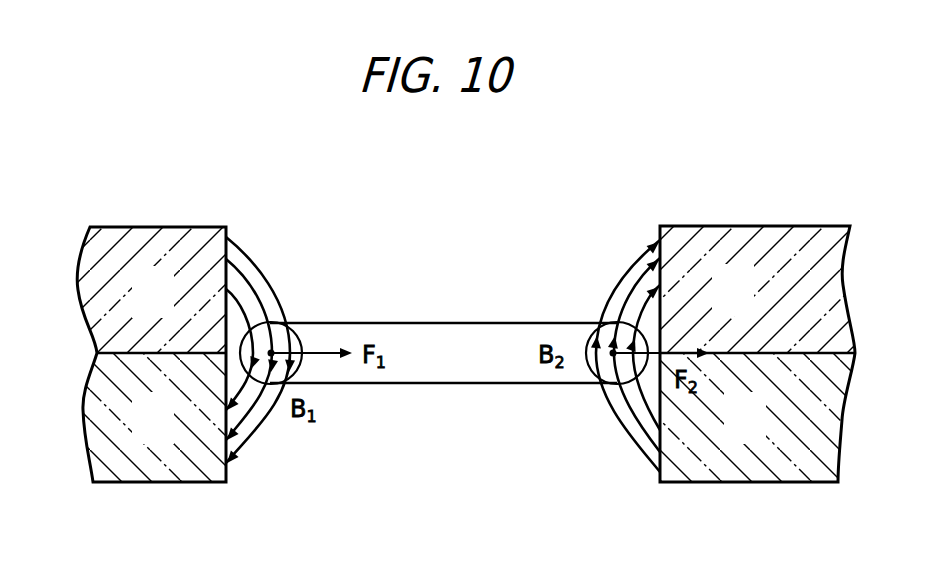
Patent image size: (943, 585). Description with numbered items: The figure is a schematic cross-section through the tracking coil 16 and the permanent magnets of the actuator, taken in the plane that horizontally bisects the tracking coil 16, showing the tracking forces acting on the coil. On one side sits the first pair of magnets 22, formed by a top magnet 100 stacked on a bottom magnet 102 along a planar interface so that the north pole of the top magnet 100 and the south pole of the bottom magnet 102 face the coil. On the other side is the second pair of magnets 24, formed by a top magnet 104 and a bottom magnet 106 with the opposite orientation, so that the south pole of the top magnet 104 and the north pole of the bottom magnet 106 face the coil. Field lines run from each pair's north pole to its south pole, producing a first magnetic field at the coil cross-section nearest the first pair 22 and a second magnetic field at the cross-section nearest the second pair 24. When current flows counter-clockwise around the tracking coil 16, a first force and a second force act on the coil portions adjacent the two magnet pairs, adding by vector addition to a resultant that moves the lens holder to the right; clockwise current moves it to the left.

The tracking coil 16 is at (432, 321).
The first pair of magnets 22 is at (165, 359).
The second pair of magnets 24 is at (760, 357).
The first or top magnet 100 is at (160, 232).
The second or bottom magnet 102 is at (152, 468).
The third or top magnet 104 is at (687, 226).
The fourth or bottom magnet 106 is at (752, 483).